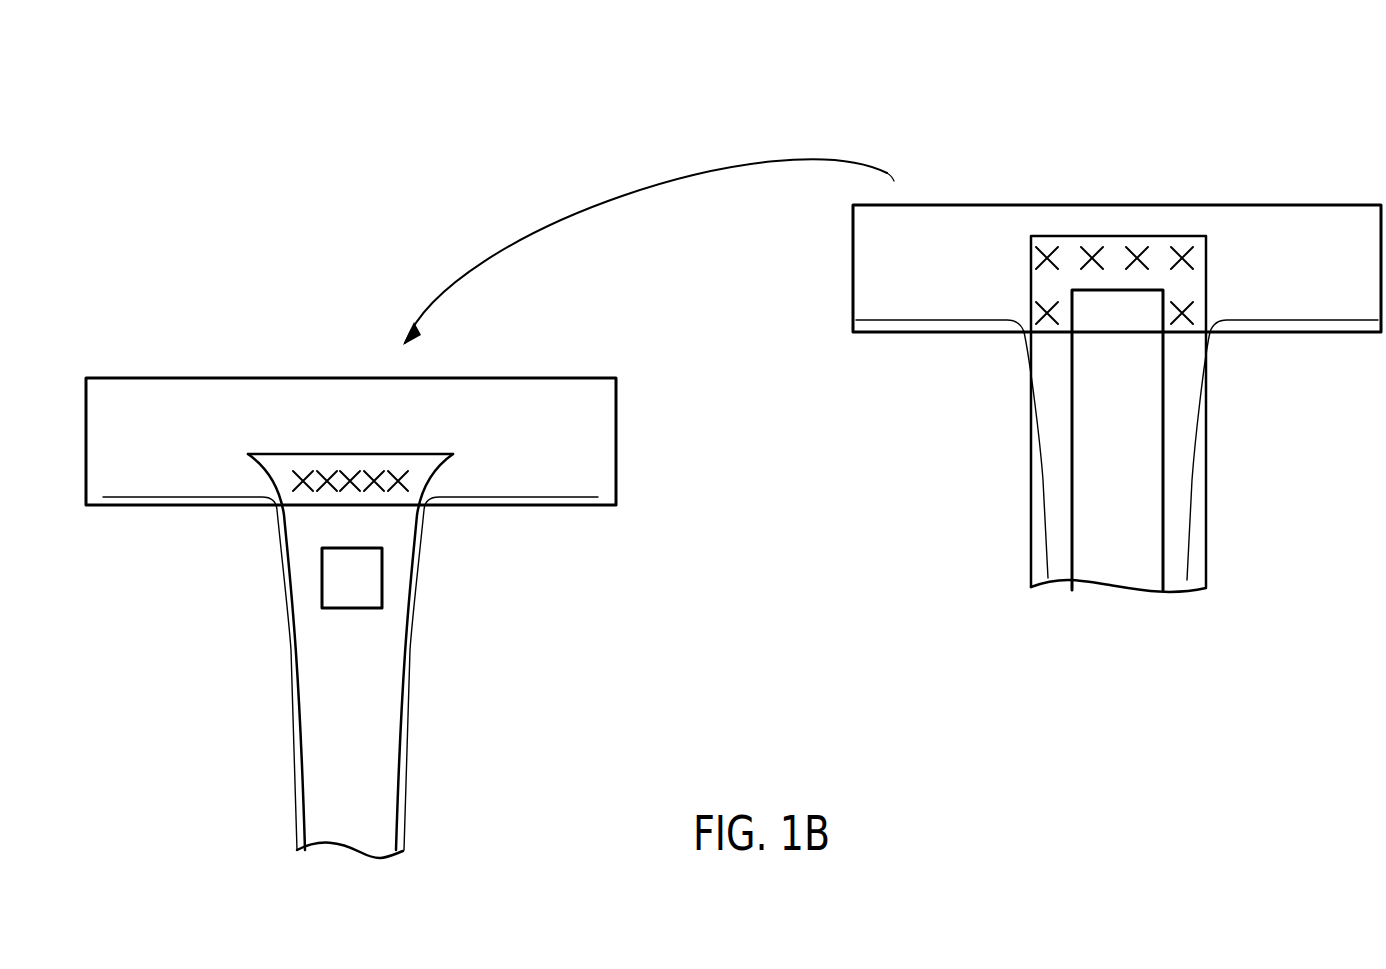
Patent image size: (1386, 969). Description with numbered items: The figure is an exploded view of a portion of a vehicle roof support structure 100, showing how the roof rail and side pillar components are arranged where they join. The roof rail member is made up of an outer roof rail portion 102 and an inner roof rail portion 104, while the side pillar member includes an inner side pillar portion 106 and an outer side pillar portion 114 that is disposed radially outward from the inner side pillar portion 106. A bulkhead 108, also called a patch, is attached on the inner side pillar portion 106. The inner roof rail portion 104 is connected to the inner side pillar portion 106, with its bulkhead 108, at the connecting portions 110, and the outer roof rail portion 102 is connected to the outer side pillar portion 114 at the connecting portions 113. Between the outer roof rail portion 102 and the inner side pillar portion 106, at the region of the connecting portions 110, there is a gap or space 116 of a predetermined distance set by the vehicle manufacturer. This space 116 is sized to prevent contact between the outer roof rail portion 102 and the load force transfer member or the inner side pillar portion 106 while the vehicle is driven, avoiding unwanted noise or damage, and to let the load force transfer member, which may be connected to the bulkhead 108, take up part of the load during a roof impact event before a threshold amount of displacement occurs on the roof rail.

The vehicle roof support structure 100 is at (1285, 147).
The outer roof rail portion 102 is at (855, 316).
The inner roof rail portion 104 is at (605, 496).
The inner side pillar portion 106 is at (385, 853).
The bulkhead 108 is at (365, 590).
The connecting portions 110 is at (385, 499).
The connecting portions 113 is at (1220, 343).
The outer side pillar portion 114 is at (1060, 575).
The space 116 is at (1109, 325).